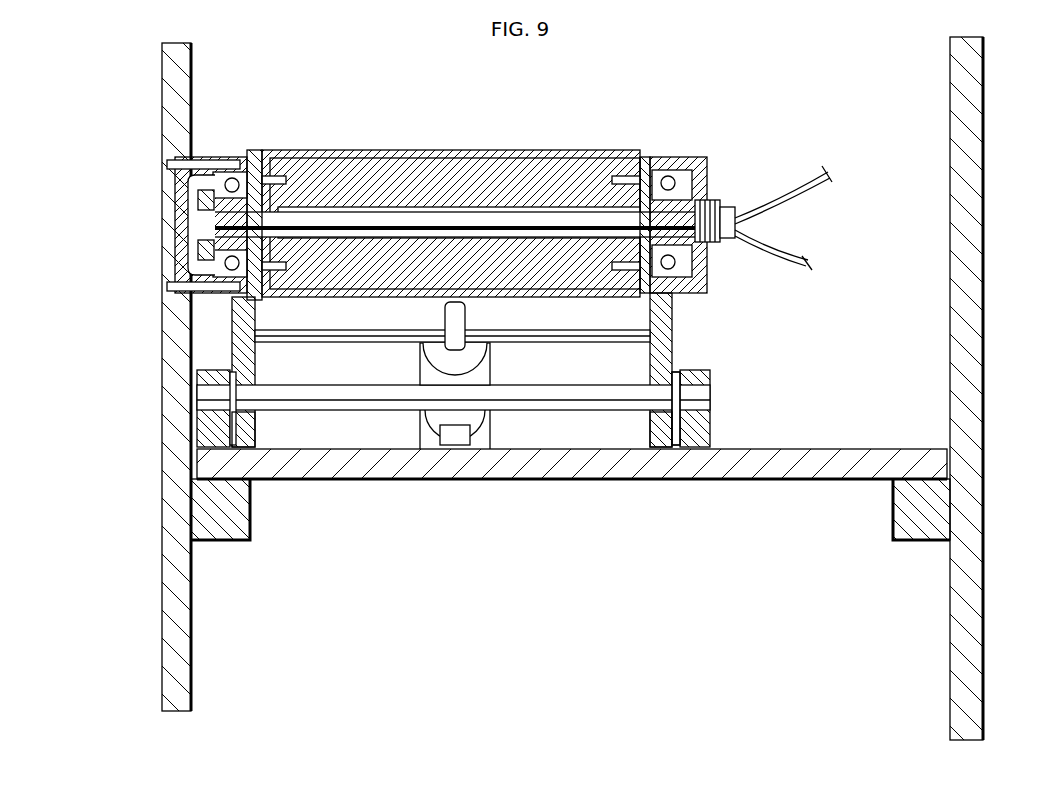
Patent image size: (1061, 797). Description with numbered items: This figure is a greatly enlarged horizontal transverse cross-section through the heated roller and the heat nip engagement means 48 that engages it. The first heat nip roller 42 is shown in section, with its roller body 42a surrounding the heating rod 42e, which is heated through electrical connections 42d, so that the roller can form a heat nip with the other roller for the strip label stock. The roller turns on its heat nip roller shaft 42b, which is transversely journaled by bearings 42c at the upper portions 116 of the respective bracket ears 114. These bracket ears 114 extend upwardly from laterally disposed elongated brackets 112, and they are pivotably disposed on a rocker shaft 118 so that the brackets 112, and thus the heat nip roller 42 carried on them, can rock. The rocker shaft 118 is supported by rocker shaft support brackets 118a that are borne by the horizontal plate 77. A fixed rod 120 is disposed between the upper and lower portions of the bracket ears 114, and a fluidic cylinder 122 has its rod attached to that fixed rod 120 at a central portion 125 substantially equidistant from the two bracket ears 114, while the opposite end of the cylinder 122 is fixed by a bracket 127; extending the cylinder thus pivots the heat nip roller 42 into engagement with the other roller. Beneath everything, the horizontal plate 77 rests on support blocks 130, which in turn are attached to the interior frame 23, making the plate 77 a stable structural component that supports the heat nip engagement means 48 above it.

The interior frame 23 is at (183, 628).
The horizontal plate 77 is at (682, 482).
The support blocks 130 is at (243, 517).
The first heat nip roller 42 is at (466, 195).
The motor housing 42a is at (372, 152).
The heat nip roller shaft 42b is at (200, 224).
The bearings 42c is at (245, 158).
The electrical connections 42d is at (815, 190).
The heating rod 42e is at (480, 213).
The heat nip engagement means 48 is at (700, 340).
The elongated brackets 112 is at (248, 428).
The bracket ears 114 is at (216, 378).
The upper portions of bracket ears 116 is at (235, 314).
The rocker shaft 118 is at (560, 402).
The rocker shaft support brackets 118a is at (705, 428).
The fixed rod 120 is at (324, 338).
The fluidic cylinder 122 is at (472, 346).
The central portion of fixed rod 125 is at (445, 322).
The bracket 127 is at (470, 430).